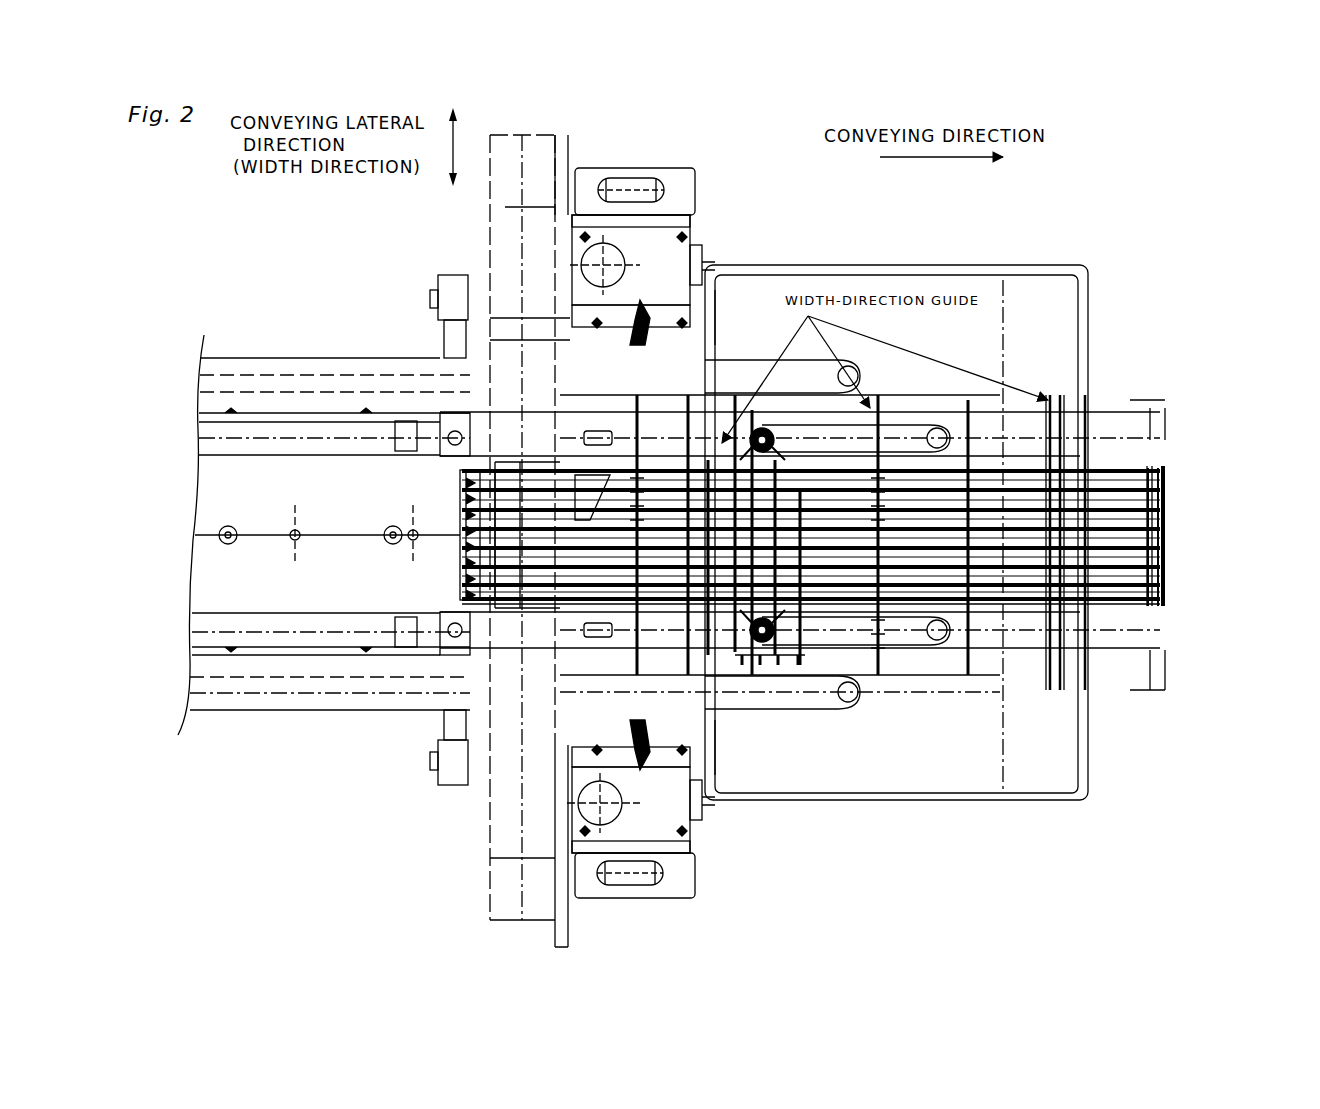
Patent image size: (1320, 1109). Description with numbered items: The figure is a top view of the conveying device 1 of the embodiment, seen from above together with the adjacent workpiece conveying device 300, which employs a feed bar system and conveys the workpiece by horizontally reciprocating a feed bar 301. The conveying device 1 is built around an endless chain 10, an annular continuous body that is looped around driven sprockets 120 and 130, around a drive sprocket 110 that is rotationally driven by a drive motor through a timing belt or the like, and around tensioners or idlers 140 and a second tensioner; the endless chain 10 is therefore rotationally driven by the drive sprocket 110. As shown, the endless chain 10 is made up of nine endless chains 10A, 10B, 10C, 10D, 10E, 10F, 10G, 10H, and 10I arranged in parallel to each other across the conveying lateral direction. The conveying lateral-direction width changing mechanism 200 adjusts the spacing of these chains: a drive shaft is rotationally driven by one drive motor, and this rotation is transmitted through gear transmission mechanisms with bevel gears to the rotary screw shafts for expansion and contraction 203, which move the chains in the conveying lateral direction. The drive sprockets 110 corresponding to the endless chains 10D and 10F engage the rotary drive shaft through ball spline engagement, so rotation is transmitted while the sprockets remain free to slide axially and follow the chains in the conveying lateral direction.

The conveying device 1 is at (1038, 352).
The endless chain 10 is at (1157, 770).
The endless chain 10A is at (1166, 604).
The endless chain 10B is at (1166, 588).
The endless chain 10C is at (1166, 572).
The endless chain 10D is at (1166, 556).
The endless chain 10E is at (1166, 540).
The endless chain 10F is at (1168, 524).
The endless chain 10G is at (1168, 509).
The endless chain 10H is at (1168, 494).
The endless chain 10I is at (1168, 478).
The drive sprocket 110 is at (1051, 672).
The driven sprocket 120 is at (448, 598).
The driven sprocket 130 is at (1160, 617).
The tensioner or idler 140 is at (979, 438).
The conveying lateral-direction width changing mechanism 200 is at (757, 720).
The rotary screw shaft for expansion and contraction 203 is at (742, 657).
The workpiece conveying device 300 is at (327, 328).
The feed bar 301 is at (740, 352).